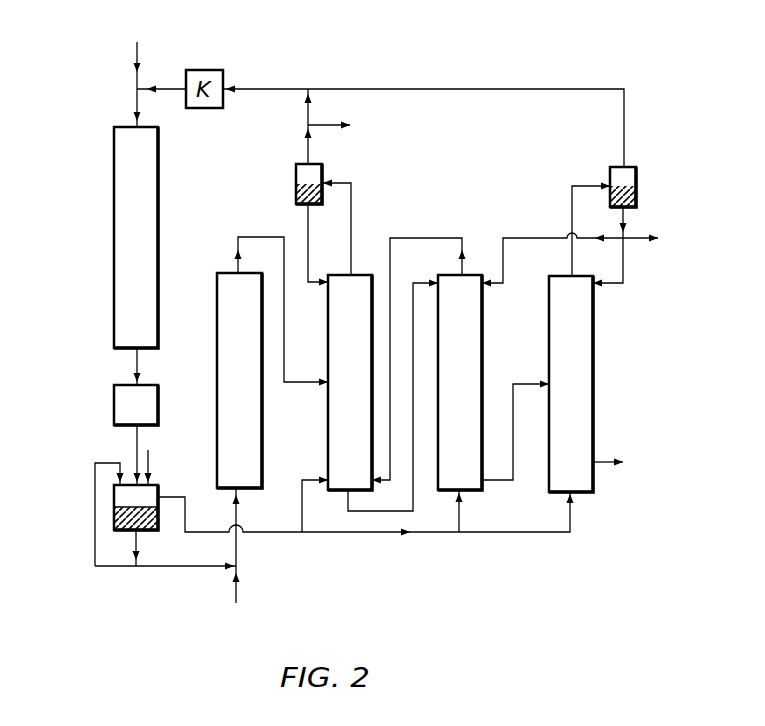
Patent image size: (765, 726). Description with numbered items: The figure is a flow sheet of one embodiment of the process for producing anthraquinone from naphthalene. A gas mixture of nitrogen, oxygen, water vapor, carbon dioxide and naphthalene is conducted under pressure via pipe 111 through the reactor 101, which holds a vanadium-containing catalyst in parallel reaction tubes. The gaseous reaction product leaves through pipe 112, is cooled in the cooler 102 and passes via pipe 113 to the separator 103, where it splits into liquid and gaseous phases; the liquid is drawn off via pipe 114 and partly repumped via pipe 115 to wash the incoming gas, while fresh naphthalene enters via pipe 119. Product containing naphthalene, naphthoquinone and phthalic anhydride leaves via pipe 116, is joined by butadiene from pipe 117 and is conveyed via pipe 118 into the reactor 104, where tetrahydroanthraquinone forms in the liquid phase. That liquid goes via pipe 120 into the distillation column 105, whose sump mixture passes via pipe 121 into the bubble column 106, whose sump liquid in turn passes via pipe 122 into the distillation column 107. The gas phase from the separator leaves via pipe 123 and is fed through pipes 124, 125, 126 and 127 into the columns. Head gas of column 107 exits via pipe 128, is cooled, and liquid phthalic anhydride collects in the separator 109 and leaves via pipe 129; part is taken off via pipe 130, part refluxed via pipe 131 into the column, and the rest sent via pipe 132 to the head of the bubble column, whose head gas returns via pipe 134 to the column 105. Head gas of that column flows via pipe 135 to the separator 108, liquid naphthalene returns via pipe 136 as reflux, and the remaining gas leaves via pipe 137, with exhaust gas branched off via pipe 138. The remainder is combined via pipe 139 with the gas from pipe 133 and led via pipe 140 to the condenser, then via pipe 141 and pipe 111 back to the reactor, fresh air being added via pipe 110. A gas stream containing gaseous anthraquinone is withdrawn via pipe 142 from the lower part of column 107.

The reactor 101 is at (136, 237).
The cooler 102 is at (114, 409).
The separator 103 is at (158, 487).
The reactor 104 is at (239, 380).
The distillation column 105 is at (350, 382).
The bubble column 106 is at (460, 382).
The distillation column 107 is at (571, 384).
The separator 108 is at (296, 184).
The separator 109 is at (636, 182).
The pipe 110 is at (148, 29).
The pipe 111 is at (136, 102).
The pipe 112 is at (133, 374).
The pipe 113 is at (133, 448).
The pipe 114 is at (136, 540).
The pipe 115 is at (95, 491).
The pipe 116 is at (190, 567).
The pipe 117 is at (237, 586).
The pipe 118 is at (237, 549).
The pipe 119 is at (149, 458).
The pipe 120 is at (307, 383).
The pipe 121 is at (418, 263).
The pipe 122 is at (514, 476).
The pipe 123 is at (218, 508).
The pipe 124 is at (302, 508).
The pipe 125 is at (383, 534).
The pipe 126 is at (460, 518).
The pipe 127 is at (528, 534).
The pipe 128 is at (588, 185).
The pipe 129 is at (627, 209).
The pipe 130 is at (637, 239).
The pipe 131 is at (611, 284).
The pipe 132 is at (528, 238).
The pipe 133 is at (497, 89).
The pipe 134 is at (426, 238).
The pipe 135 is at (352, 193).
The pipe 136 is at (308, 225).
The pipe 137 is at (308, 150).
The pipe 138 is at (344, 125).
The pipe 139 is at (308, 108).
The pipe 140 is at (281, 89).
The pipe 141 is at (167, 89).
The pipe 142 is at (608, 463).